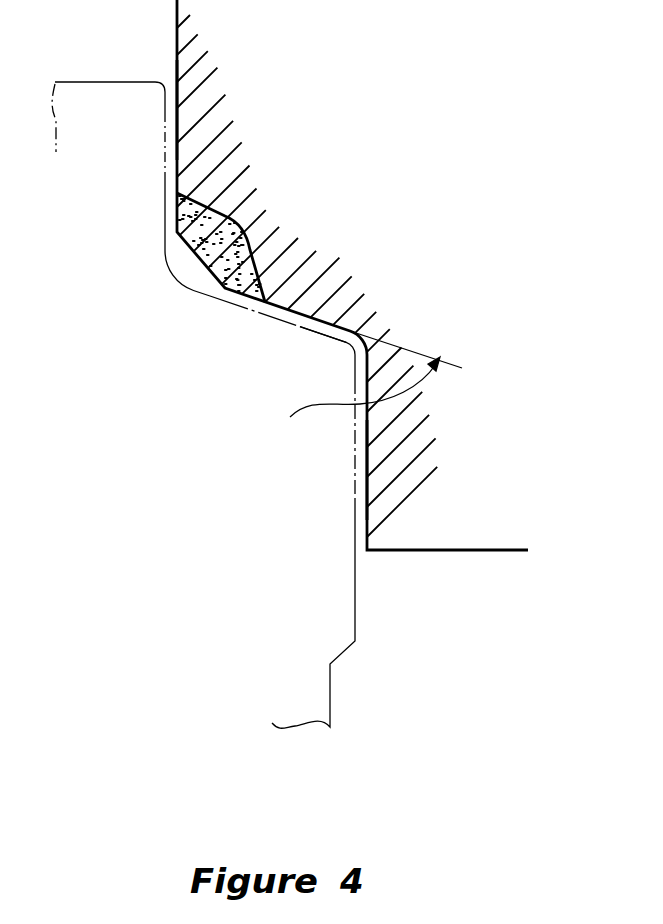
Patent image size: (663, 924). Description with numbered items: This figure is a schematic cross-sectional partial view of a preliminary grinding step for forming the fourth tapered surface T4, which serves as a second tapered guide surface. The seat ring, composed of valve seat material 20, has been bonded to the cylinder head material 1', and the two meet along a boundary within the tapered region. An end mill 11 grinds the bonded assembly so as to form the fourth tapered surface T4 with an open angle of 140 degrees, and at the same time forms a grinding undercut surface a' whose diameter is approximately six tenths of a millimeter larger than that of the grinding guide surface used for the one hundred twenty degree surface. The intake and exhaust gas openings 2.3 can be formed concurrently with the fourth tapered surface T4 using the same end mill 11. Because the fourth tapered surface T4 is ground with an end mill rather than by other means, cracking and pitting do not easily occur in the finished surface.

The cylinder head material 1' is at (309, 275).
The intake and exhaust gas openings 2.3 is at (182, 108).
The valve seat material 20 is at (217, 213).
The fourth tapered surface T4 is at (317, 330).
The open angle of the fourth tapered surface 140 is at (351, 397).
The grinding undercut surface a' is at (329, 499).
The end mill 11 is at (333, 691).